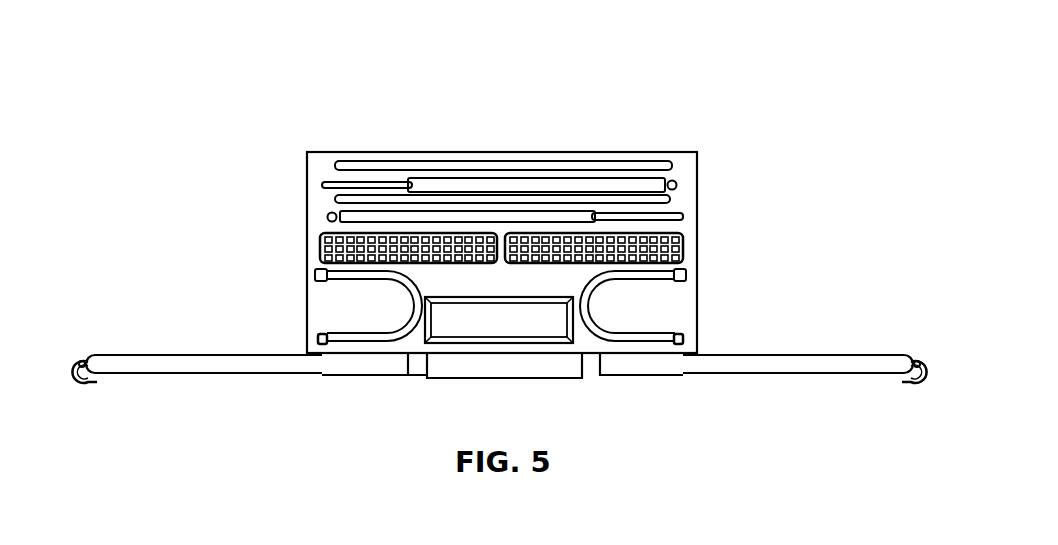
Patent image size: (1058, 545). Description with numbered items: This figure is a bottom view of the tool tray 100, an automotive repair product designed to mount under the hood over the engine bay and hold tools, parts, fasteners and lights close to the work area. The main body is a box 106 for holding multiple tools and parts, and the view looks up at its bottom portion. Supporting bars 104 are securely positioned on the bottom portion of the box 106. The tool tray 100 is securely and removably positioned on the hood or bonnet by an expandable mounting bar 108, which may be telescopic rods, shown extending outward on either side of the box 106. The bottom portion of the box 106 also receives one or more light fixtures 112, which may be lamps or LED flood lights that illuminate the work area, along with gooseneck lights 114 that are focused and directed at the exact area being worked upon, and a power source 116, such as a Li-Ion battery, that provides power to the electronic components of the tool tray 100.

The tool tray 100 is at (186, 94).
The supporting bars 104 is at (573, 218).
The box 106 is at (443, 157).
The expandable mounting bar 108 is at (178, 366).
The light fixtures 112 is at (320, 250).
The gooseneck lights 114 is at (358, 338).
The power source 116 is at (502, 327).